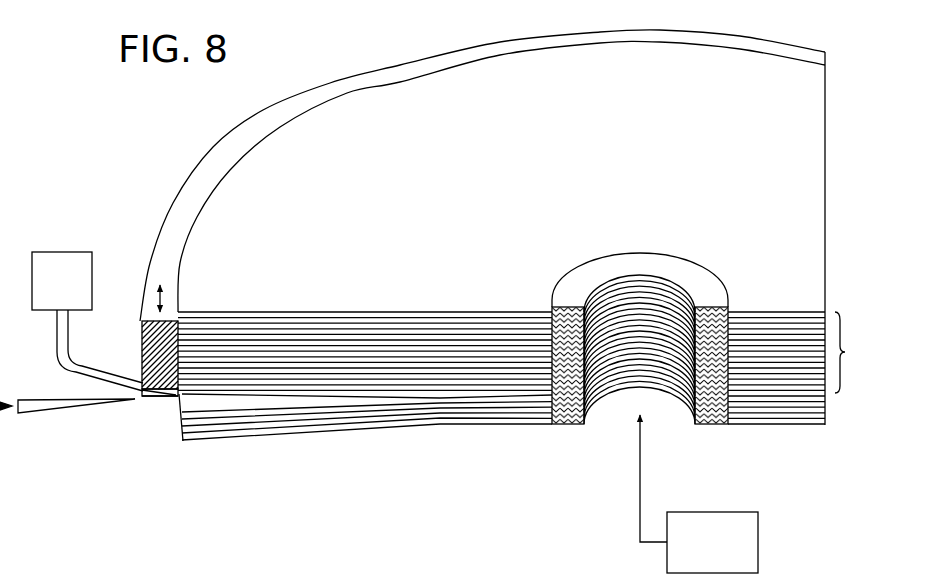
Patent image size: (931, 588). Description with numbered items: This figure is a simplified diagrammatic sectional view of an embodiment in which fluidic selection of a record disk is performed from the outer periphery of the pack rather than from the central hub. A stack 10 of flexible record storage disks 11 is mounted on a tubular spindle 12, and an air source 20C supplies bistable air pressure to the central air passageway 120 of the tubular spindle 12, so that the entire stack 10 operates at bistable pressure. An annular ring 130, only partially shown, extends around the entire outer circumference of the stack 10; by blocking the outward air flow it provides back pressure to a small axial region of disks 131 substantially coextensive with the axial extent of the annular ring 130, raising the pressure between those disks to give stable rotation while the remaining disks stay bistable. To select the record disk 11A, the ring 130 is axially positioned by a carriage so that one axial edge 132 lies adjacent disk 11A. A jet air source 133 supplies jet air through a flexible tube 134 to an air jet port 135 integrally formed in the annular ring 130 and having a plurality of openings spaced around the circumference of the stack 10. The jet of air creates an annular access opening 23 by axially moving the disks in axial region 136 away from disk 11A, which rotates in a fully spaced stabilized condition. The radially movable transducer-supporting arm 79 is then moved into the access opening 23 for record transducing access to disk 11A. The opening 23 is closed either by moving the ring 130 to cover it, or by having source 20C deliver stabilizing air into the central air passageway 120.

The stack 10 is at (417, 432).
The flexible record storage disks 11 is at (470, 325).
The record disk 11A is at (180, 398).
The tubular spindle 12 is at (708, 428).
The annular access opening 23 is at (204, 403).
The radially movable arm 79 is at (27, 414).
The central air passageway 120 is at (614, 415).
The annular ring 130 is at (144, 335).
The axial region of disks 131 is at (851, 352).
The axial edge 132 is at (153, 397).
The jet air source 133 is at (67, 252).
The flexible tube 134 is at (57, 341).
The air jet port 135 is at (174, 393).
The axial region 136 is at (176, 440).
The air source 20C is at (737, 512).